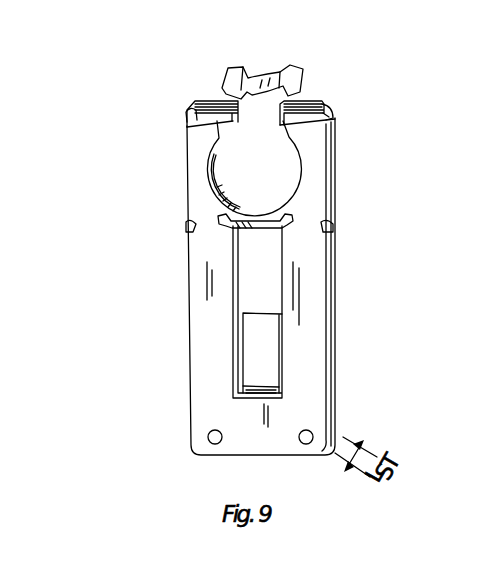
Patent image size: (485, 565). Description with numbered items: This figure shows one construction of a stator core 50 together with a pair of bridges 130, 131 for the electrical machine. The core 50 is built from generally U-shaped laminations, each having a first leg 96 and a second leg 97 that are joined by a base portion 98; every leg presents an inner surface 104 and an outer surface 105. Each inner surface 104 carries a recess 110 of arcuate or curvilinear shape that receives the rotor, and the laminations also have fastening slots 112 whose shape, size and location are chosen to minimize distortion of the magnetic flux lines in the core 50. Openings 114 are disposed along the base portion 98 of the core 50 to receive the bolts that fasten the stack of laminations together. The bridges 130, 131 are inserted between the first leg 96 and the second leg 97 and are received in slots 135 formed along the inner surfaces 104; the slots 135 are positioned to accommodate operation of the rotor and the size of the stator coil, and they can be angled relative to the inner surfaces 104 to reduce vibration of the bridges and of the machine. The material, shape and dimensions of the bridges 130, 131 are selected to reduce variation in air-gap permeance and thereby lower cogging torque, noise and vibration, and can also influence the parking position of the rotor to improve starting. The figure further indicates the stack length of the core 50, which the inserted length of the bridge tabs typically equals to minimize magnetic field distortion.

The core 50 is at (105, 309).
The first leg 96 is at (188, 344).
The second leg 97 is at (320, 278).
The base portion 98 is at (246, 435).
The inner surface 104 is at (262, 318).
The outer surface 105 is at (188, 280).
The recess 110 is at (214, 159).
The fastening slots 112 is at (178, 108).
The openings 114 is at (208, 437).
The bridge 130 is at (262, 76).
The bridge 131 is at (256, 212).
The slots 135 is at (188, 126).